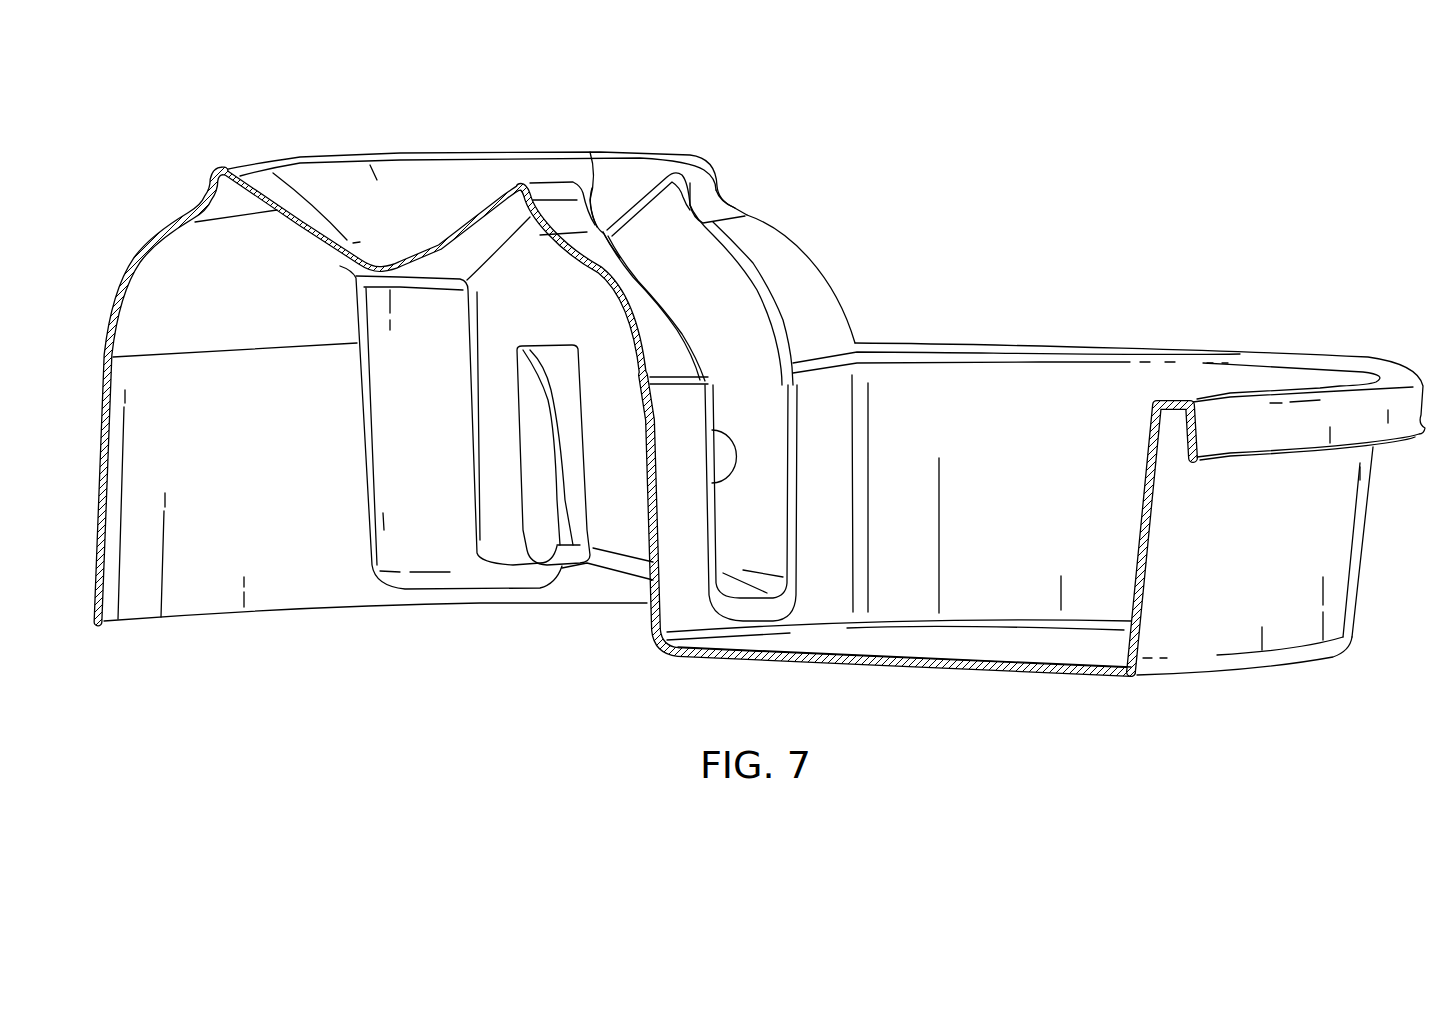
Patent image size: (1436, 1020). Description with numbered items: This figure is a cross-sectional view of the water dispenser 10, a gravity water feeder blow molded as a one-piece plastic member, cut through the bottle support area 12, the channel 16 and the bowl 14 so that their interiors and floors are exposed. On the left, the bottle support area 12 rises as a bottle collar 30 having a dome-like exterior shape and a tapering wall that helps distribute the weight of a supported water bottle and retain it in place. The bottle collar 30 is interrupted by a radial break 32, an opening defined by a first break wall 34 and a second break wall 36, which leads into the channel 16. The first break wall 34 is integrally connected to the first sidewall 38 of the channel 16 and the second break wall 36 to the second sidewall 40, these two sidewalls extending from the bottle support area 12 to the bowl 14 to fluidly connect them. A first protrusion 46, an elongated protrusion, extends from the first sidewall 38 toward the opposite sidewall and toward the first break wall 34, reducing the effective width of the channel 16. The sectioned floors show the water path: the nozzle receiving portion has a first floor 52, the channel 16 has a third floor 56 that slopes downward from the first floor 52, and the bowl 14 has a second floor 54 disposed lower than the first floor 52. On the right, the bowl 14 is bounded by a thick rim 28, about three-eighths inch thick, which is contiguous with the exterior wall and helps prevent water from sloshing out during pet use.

The water dispenser 10 is at (1100, 138).
The bottle support area 12 is at (320, 128).
The bowl 14 is at (1190, 320).
The channel 16 is at (708, 280).
The rim 28 is at (1361, 358).
The bottle collar 30 is at (135, 255).
The radial break 32 is at (623, 195).
The first break wall 34 is at (588, 152).
The second break wall 36 is at (647, 193).
The first sidewall 38 is at (713, 483).
The second sidewall 40 is at (727, 342).
The first protrusion 46 is at (573, 438).
The first floor 52 is at (426, 590).
The second floor 54 is at (994, 639).
The third floor 56 is at (737, 587).